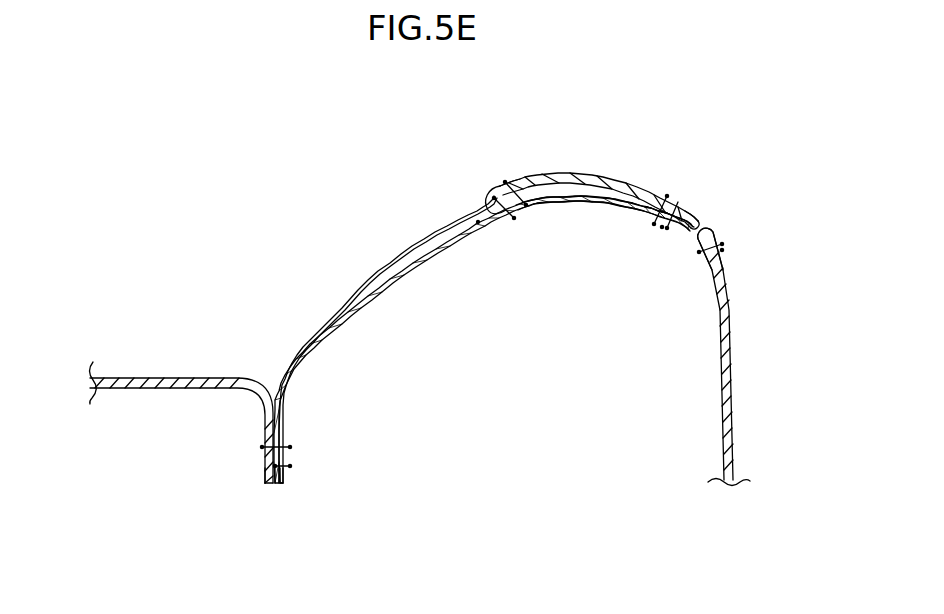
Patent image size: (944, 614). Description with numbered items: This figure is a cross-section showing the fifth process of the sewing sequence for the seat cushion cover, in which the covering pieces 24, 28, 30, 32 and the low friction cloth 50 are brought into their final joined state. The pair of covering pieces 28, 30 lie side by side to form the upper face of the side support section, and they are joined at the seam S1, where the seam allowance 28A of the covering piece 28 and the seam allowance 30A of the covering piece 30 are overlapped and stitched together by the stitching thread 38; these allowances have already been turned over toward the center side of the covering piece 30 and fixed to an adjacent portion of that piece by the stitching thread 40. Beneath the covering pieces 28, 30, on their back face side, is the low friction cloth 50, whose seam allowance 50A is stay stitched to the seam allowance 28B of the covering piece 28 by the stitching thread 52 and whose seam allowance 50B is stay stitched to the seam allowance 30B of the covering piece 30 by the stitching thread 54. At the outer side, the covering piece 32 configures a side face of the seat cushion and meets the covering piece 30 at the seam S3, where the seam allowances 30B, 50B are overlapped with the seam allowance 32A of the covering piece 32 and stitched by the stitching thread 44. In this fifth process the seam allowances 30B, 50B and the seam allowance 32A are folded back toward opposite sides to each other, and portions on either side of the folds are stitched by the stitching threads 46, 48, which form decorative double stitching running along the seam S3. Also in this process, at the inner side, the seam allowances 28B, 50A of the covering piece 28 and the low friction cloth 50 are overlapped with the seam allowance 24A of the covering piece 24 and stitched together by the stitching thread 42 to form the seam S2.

The covering piece 24 is at (157, 381).
The seam allowance of covering piece 24 24A is at (262, 472).
The covering piece 28 is at (393, 270).
The seam allowance of covering piece 28 28A is at (540, 212).
The seam allowance of covering piece 28 28B is at (282, 486).
The covering piece 30 is at (572, 172).
The seam allowance of covering piece 30 30A is at (518, 180).
The seam allowance of covering piece 30 30B is at (688, 232).
The covering piece 32 is at (733, 386).
The seam allowance of covering piece 32 32A is at (721, 280).
The stitching thread 38 is at (478, 223).
The stitching thread 40 is at (499, 184).
The stitching thread 42 is at (261, 447).
The stitching thread 44 is at (713, 240).
The stitching thread 46 is at (666, 200).
The stitching thread 48 is at (723, 250).
The low friction cloth 50 is at (422, 279).
The seam allowance of low friction cloth 50A is at (284, 486).
The seam allowance of low friction cloth 50B is at (652, 222).
The stitching thread 52 is at (291, 466).
The stitching thread 54 is at (662, 228).
The seam S1 is at (468, 196).
The seam S2 is at (269, 372).
The seam S3 is at (706, 212).